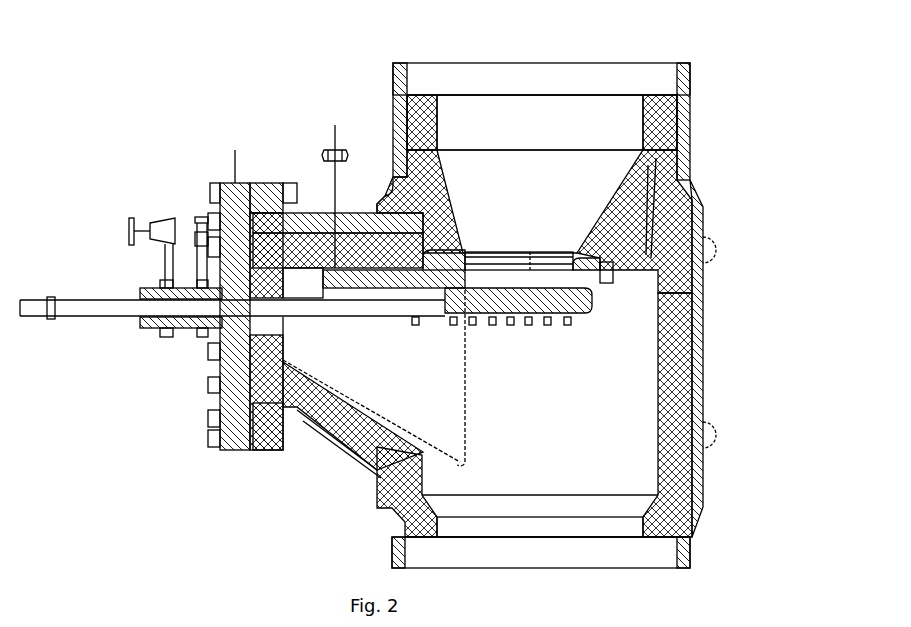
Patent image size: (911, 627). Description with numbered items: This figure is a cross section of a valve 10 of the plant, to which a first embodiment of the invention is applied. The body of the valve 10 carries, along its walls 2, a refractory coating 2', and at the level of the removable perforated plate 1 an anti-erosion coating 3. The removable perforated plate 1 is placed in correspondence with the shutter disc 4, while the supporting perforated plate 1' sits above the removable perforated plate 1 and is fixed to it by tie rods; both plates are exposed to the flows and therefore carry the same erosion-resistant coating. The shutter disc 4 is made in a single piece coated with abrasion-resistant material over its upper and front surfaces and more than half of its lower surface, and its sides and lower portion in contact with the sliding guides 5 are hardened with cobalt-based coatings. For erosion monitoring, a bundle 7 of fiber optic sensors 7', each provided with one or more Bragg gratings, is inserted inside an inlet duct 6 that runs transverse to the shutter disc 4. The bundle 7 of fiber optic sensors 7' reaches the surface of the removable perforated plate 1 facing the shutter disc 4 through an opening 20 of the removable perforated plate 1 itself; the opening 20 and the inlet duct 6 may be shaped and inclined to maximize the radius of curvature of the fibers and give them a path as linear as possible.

The removable perforated plate 1 is at (232, 354).
The supporting perforated plate 1' is at (749, 227).
The walls 2 is at (551, 315).
The refractory coating 2' is at (534, 148).
The anti-erosion coating 3 is at (575, 278).
The shutter disc 4 is at (585, 305).
The sliding guides 5 is at (372, 295).
The inlet duct 6 is at (323, 157).
The bundle of fiber optic sensors 7 is at (278, 142).
The fiber optic sensors 7' is at (519, 248).
The valve 10 is at (564, 300).
The opening 20 is at (412, 270).